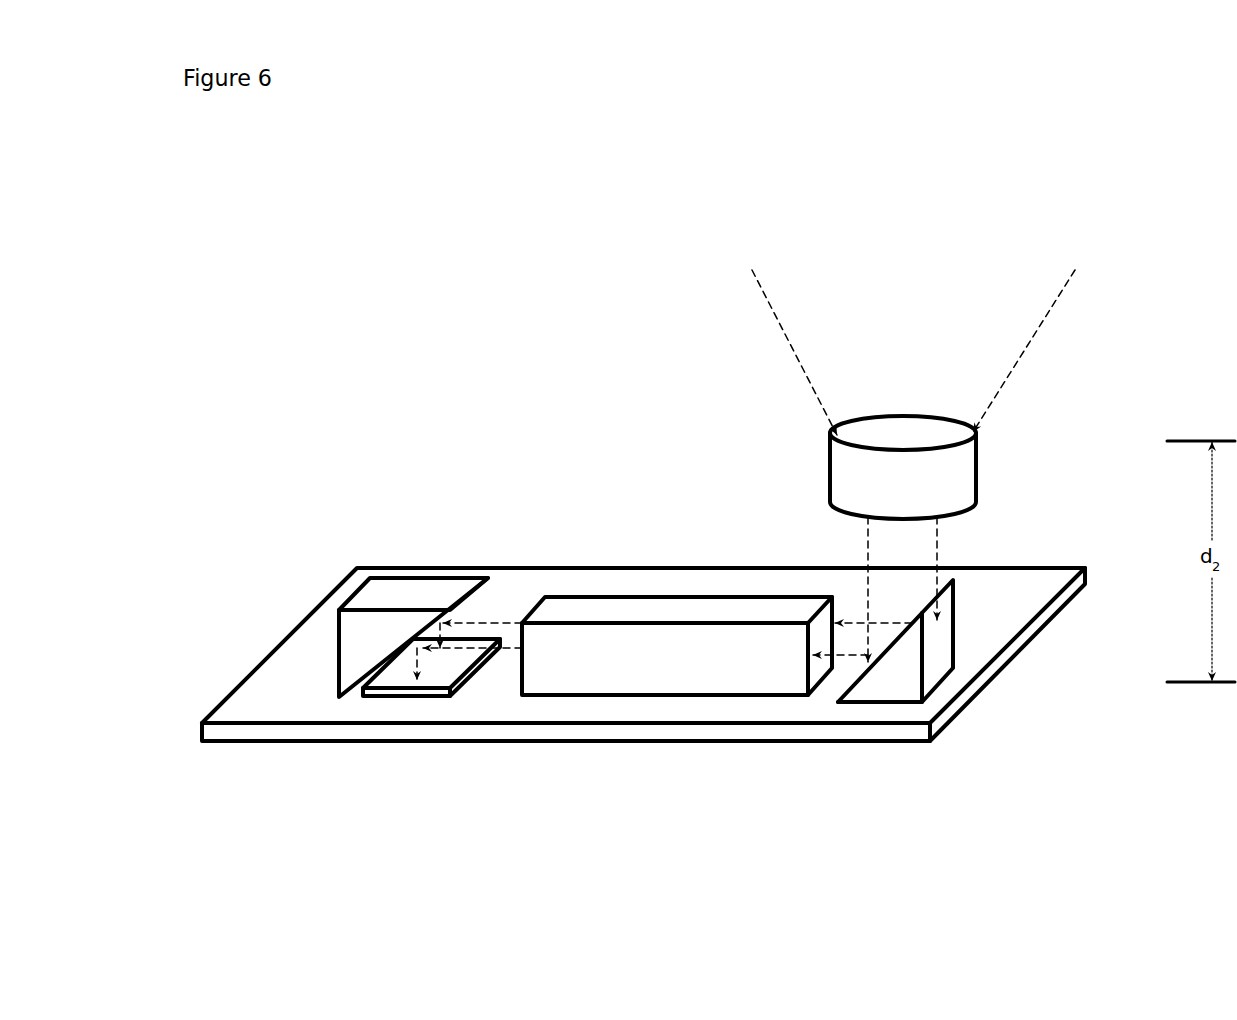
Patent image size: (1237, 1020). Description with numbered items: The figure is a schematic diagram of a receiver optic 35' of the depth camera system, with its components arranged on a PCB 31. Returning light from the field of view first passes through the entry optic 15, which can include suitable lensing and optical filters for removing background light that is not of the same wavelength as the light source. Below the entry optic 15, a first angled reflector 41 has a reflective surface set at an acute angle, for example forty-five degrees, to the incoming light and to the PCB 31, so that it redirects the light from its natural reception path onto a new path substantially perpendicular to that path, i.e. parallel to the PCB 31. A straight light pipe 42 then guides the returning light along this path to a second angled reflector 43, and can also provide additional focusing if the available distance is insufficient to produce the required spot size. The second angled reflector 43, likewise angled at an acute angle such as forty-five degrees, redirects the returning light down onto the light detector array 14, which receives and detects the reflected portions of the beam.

The receiver optic 35' is at (652, 551).
The PCB 31 is at (287, 706).
The second angled reflector 43 is at (353, 632).
The light detector array 14 is at (447, 690).
The straight light pipe 42 is at (678, 612).
The first angled reflector 41 is at (907, 685).
The entry optic 15 is at (965, 477).